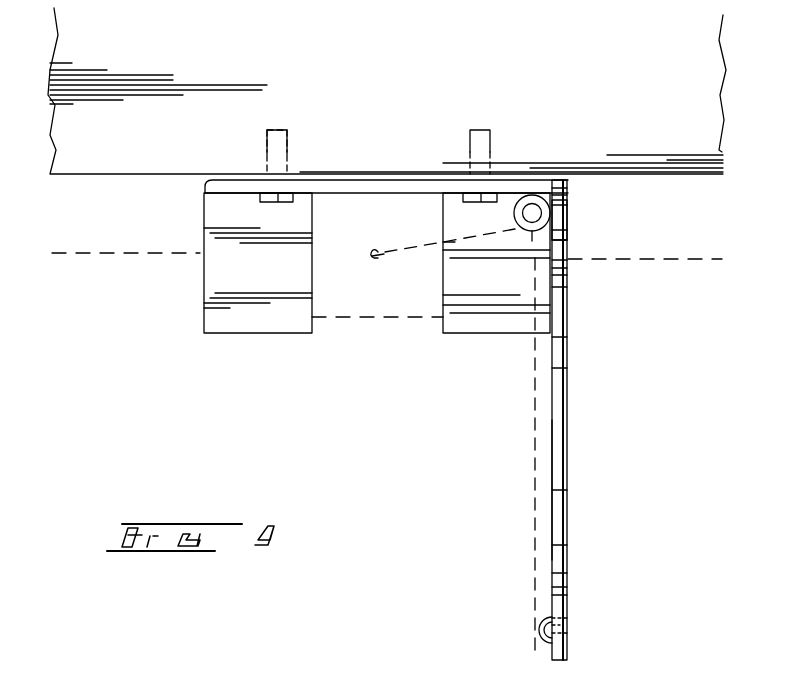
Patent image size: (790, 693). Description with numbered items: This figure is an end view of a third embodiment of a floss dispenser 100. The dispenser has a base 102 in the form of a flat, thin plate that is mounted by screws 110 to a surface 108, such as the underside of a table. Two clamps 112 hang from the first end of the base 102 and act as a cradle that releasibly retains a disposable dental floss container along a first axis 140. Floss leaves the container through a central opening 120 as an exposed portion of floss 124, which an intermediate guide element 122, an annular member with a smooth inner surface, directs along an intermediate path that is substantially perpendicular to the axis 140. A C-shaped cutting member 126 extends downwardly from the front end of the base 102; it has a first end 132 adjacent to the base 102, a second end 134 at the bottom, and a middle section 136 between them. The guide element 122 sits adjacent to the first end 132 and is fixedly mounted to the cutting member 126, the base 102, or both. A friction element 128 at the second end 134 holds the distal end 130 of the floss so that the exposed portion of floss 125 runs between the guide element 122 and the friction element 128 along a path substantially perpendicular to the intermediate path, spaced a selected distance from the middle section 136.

The floss dispenser 100 is at (627, 380).
The base 102 is at (423, 188).
The surface 108 is at (118, 177).
The screws 110 is at (290, 135).
The clamps 112 is at (235, 275).
The central opening 120 is at (370, 260).
The intermediate guide element 122 is at (544, 200).
The exposed portion of floss 124 is at (428, 246).
The exposed portion of floss 125 is at (535, 420).
The cutting member 126 is at (568, 294).
The friction element 128 is at (537, 641).
The distal end 130 is at (540, 612).
The first end 132 is at (567, 219).
The second end 134 is at (563, 620).
The middle section 136 is at (556, 462).
The first axis 140 is at (75, 258).